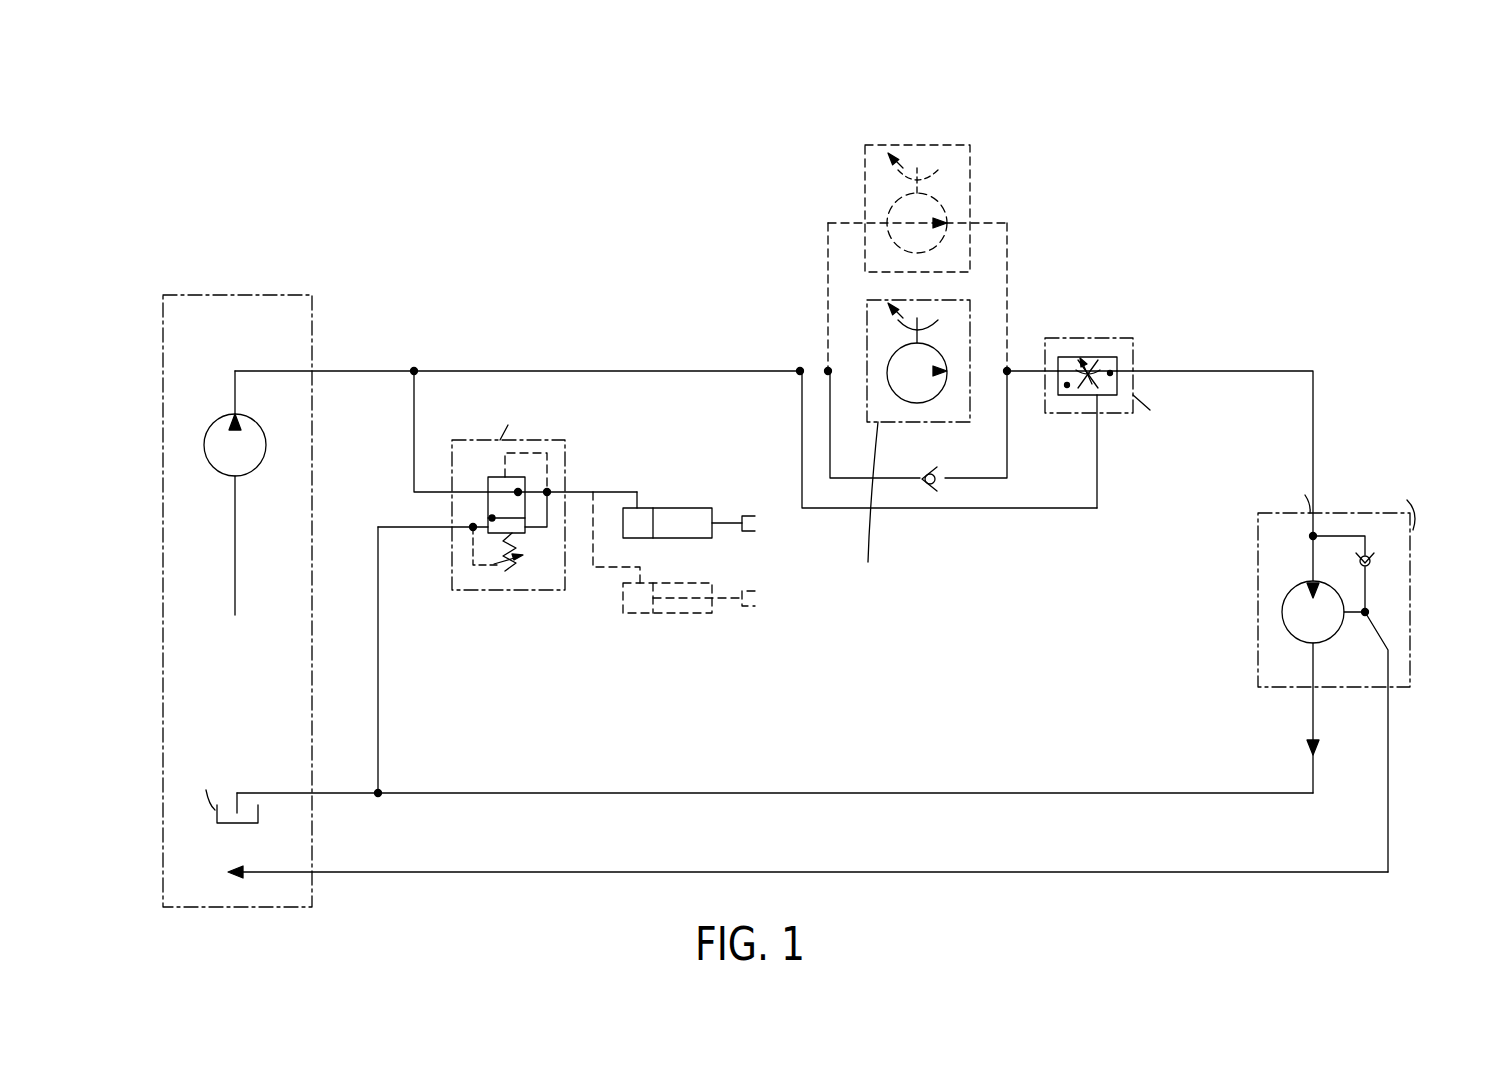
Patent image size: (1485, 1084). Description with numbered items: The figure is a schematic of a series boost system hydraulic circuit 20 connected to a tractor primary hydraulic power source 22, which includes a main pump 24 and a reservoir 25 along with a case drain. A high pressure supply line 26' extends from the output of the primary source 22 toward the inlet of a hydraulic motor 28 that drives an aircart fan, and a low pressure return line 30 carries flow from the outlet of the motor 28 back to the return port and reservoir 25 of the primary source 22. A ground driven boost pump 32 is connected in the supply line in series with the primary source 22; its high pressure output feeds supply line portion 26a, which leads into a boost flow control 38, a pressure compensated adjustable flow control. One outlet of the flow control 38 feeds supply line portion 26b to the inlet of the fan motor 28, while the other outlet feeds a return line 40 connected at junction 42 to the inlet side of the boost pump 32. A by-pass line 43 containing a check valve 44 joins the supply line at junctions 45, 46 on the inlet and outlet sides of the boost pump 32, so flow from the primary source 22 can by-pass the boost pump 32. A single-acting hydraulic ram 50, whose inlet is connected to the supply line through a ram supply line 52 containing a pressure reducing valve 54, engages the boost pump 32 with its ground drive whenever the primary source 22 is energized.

The series boost system hydraulic circuit 20 is at (508, 152).
The tractor primary hydraulic power source 22 is at (320, 630).
The main pump 24 is at (266, 445).
The reservoir 25 is at (292, 757).
The high pressure supply line 26' is at (517, 333).
The supply line portion 26a is at (1027, 379).
The supply line portion 26b is at (1220, 372).
The hydraulic motor 28 is at (1414, 640).
The low pressure return line 30 is at (937, 872).
The boost pump 32 is at (968, 165).
The boost flow control 38 is at (1092, 318).
The return line 40 is at (1040, 508).
The junction 42 is at (794, 356).
The by-pass line 43 is at (1007, 462).
The check valve 44 is at (929, 497).
The junction 45 is at (828, 371).
The junction 46 is at (1007, 371).
The single-acting hydraulic ram 50 is at (663, 490).
The ram supply line 52 is at (415, 407).
The pressure reducing valve 54 is at (509, 603).